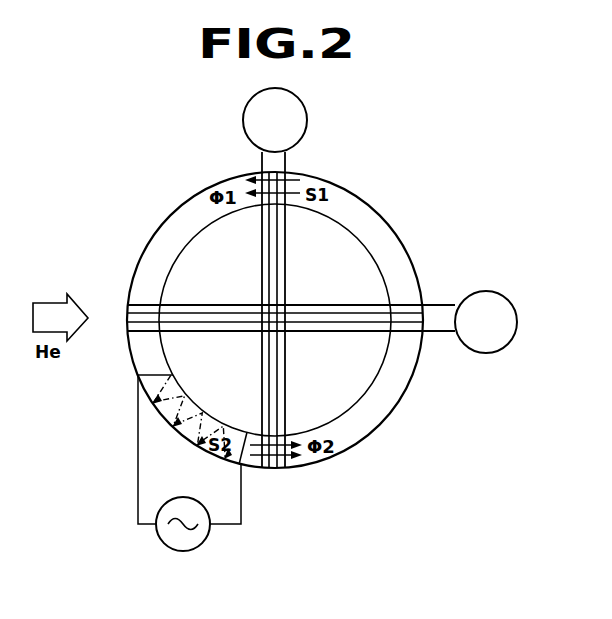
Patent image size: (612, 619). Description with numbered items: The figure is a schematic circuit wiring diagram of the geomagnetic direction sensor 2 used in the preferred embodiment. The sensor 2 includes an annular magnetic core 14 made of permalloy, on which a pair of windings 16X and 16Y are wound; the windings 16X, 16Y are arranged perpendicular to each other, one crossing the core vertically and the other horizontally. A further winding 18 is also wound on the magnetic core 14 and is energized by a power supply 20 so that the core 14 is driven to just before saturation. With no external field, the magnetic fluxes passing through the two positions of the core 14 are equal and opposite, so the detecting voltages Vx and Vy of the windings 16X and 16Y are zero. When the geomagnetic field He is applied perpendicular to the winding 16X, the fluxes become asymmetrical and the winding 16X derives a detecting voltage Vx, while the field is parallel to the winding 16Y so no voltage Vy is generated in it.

The geomagnetic direction sensor 2 is at (150, 222).
The annular magnetic core 14 is at (386, 398).
The winding 16X is at (284, 250).
The winding 16Y is at (370, 313).
The winding 18 is at (165, 418).
The power supply 20 is at (201, 545).